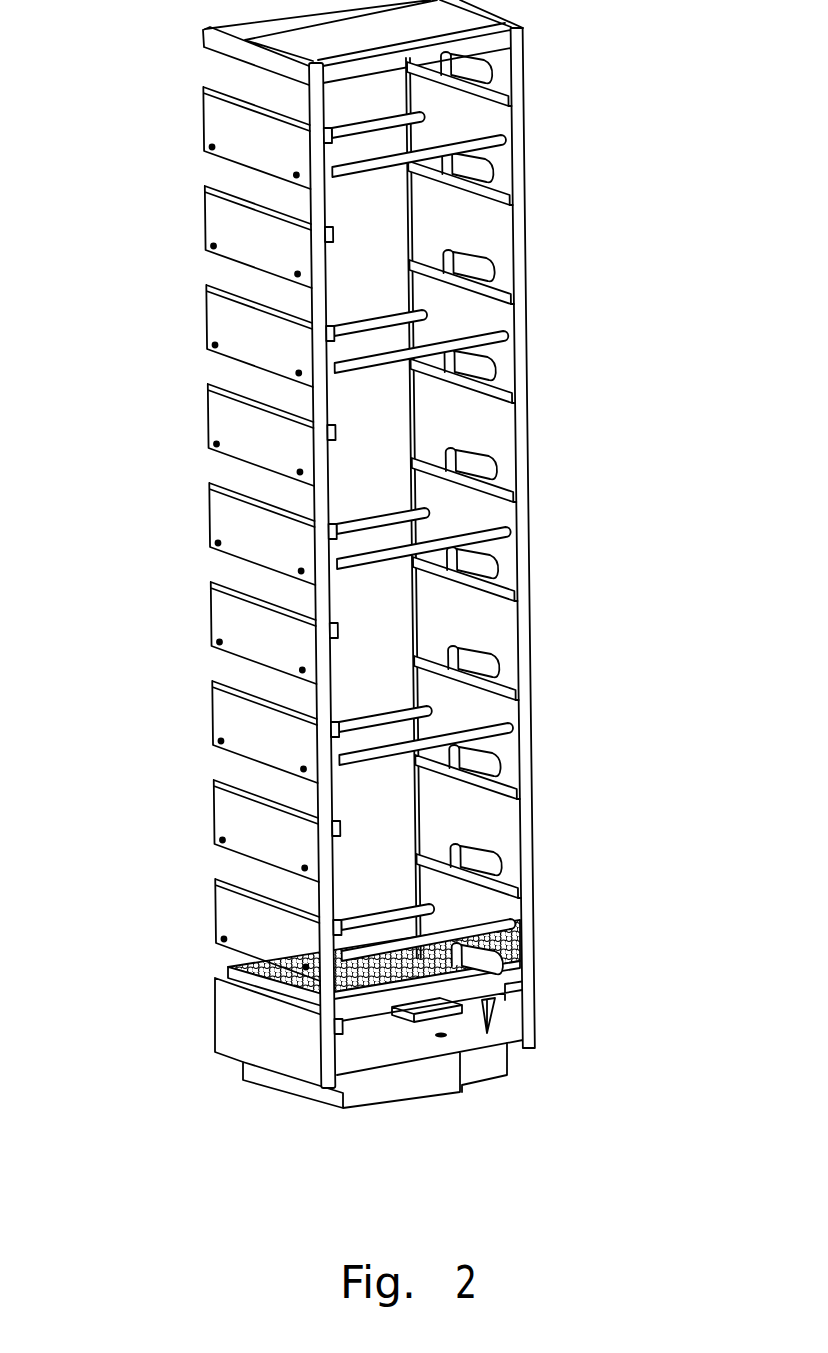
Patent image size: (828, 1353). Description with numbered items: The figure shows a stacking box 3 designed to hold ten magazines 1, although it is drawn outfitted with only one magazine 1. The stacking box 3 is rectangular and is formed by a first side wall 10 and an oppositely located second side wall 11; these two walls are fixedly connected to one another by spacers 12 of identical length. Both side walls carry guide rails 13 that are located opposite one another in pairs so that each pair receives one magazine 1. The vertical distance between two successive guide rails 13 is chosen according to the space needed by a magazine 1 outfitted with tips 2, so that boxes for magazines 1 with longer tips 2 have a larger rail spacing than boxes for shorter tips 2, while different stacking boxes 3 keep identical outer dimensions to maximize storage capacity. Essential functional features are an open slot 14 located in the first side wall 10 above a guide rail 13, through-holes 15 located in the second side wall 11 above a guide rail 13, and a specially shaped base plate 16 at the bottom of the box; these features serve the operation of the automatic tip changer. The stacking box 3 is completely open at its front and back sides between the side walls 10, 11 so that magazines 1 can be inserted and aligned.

The magazine 1 is at (484, 990).
The tip 2 is at (500, 1016).
The stacking box 3 is at (583, 257).
The first side wall 10 is at (247, 910).
The second side wall 11 is at (498, 628).
The spacer 12 is at (507, 548).
The guide rail 13 is at (512, 388).
The open slot 14 is at (268, 778).
The through-hole 15 is at (480, 760).
The base plate 16 is at (423, 1083).